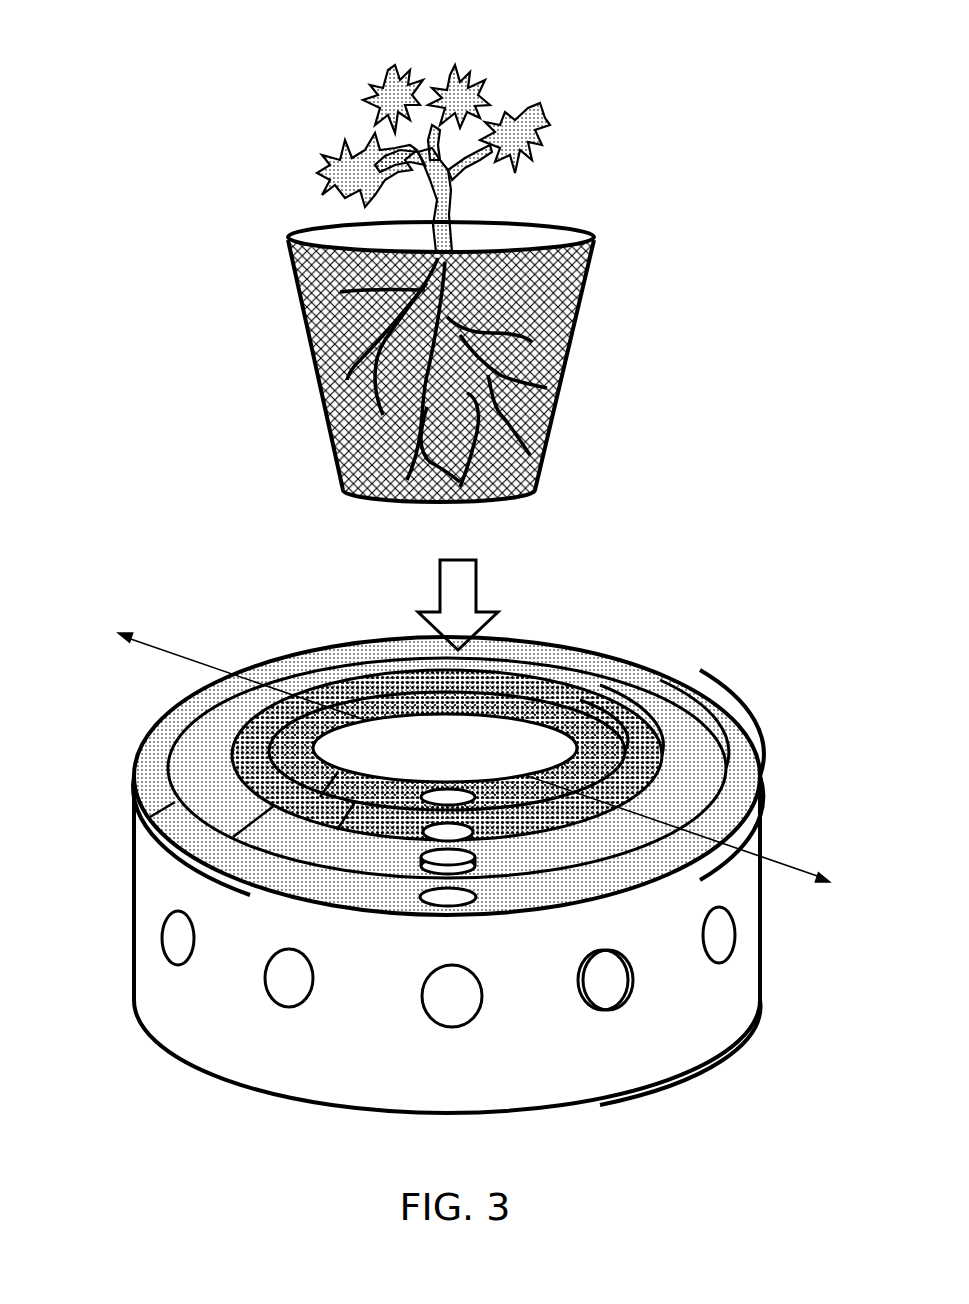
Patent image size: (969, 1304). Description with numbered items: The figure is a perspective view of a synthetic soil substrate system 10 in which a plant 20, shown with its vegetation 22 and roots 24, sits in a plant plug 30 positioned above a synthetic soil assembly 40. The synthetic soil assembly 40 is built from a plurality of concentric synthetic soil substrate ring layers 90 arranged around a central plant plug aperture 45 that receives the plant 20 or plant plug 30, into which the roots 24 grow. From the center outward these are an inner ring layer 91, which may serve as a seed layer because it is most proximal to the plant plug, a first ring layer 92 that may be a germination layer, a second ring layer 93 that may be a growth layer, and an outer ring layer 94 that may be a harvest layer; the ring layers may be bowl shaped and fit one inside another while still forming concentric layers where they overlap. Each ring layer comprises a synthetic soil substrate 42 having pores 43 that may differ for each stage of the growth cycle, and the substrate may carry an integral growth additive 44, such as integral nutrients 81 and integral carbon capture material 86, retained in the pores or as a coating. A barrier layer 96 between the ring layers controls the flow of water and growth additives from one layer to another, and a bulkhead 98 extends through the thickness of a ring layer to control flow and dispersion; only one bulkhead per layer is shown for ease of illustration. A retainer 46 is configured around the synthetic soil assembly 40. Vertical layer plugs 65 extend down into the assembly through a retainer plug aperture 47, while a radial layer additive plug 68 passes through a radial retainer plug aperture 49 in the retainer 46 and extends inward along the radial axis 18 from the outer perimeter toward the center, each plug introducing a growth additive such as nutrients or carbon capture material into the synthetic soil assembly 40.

The synthetic soil substrate system 10 is at (186, 106).
The plant 20 is at (360, 147).
The vegetation 22 is at (395, 78).
The roots 24 is at (355, 390).
The plant plug 30 is at (330, 240).
The radial axis 18 is at (762, 870).
The synthetic soil assembly 40 is at (290, 692).
The synthetic soil substrate 42 is at (312, 690).
The pores 43 is at (348, 700).
The integral growth additive 44 is at (214, 728).
The plant plug aperture 45 is at (505, 745).
The retainer 46 is at (690, 1003).
The retainer plug aperture 47 is at (453, 898).
The radial retainer plug aperture 49 is at (593, 990).
The vertical layer plug 65 is at (470, 858).
The radial layer additive plug 68 is at (625, 987).
The integral nutrients 81 is at (205, 752).
The integral carbon capture material 86 is at (205, 768).
The concentric synthetic soil substrate ring layers 90 is at (750, 800).
The inner ring layer 91 is at (598, 757).
The first ring layer 92 is at (688, 742).
The second ring layer 93 is at (742, 760).
The outer ring layer 94 is at (728, 745).
The barrier layer 96 is at (192, 818).
The bulkhead 98 is at (158, 804).